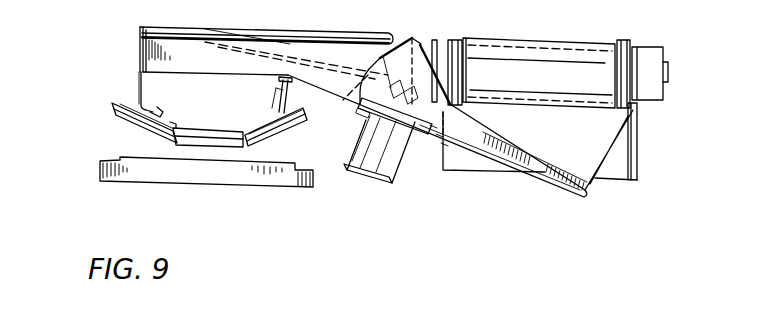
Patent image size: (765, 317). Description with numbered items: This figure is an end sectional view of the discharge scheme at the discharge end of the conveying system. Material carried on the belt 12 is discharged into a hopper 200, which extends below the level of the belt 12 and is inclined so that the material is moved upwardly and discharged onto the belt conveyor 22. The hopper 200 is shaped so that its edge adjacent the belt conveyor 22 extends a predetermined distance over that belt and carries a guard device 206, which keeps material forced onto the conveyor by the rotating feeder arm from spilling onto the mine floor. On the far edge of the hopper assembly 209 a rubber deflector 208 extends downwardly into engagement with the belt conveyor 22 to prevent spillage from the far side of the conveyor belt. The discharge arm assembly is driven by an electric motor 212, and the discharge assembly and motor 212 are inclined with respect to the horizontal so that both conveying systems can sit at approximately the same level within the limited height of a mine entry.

The belt 12 is at (574, 48).
The belt conveyor 22 is at (140, 87).
The hopper 200 is at (618, 144).
The guard device 206 is at (281, 94).
The rubber deflector 208 is at (192, 115).
The hopper assembly 209 is at (140, 32).
The electric motor 212 is at (396, 155).